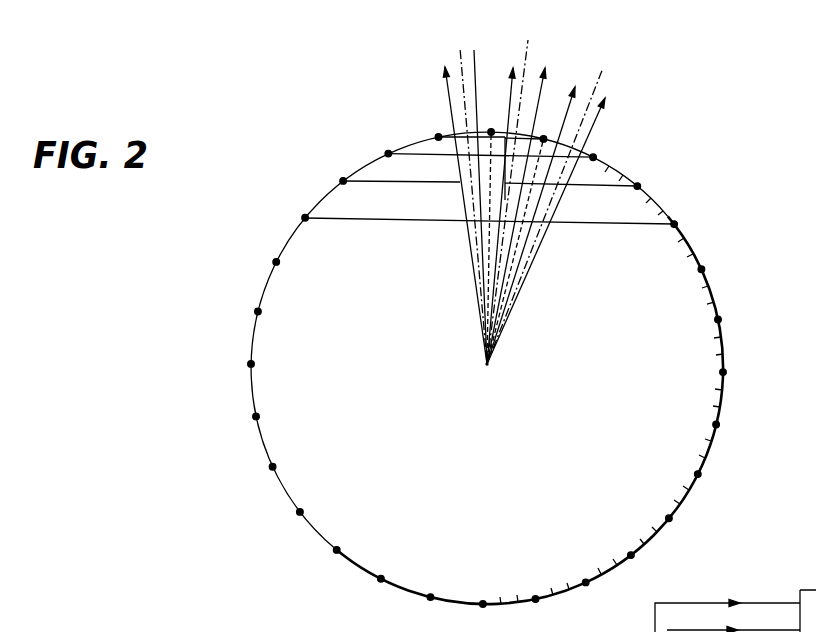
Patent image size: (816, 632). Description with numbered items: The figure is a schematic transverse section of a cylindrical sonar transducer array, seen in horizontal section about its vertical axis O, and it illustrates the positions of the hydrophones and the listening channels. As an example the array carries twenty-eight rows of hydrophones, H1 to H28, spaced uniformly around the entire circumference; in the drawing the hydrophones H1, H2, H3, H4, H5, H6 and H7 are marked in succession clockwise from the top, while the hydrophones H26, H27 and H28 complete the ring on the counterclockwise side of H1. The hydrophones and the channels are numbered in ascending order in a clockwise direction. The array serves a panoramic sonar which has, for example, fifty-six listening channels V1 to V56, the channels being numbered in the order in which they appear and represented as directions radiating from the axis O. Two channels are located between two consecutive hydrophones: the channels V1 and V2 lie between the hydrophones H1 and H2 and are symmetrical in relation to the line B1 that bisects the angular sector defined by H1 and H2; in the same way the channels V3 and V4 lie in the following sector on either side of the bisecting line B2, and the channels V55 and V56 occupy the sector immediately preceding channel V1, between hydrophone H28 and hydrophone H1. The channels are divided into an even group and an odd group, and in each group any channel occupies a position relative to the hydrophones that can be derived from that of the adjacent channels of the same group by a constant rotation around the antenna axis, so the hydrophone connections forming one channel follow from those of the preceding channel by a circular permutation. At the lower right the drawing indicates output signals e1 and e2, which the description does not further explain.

The hydrophone H1 is at (491, 235).
The hydrophone H2 is at (522, 237).
The hydrophone H3 is at (605, 148).
The hydrophone H4 is at (652, 184).
The hydrophone H5 is at (688, 216).
The hydrophone H6 is at (715, 264).
The hydrophone H7 is at (731, 315).
The hydrophone H26 is at (323, 172).
The hydrophone H27 is at (373, 144).
The hydrophone H28 is at (425, 126).
The listening channel V1 is at (504, 206).
The listening channel V2 is at (523, 208).
The listening channel V3 is at (537, 215).
The listening channel V4 is at (555, 221).
The listening channel V55 is at (455, 204).
The listening channel V56 is at (474, 200).
The bisecting line B1 is at (512, 196).
The bisecting line B2 is at (552, 204).
The vertical axis O is at (486, 374).
The output signal e1 is at (727, 610).
The output signal e2 is at (733, 624).